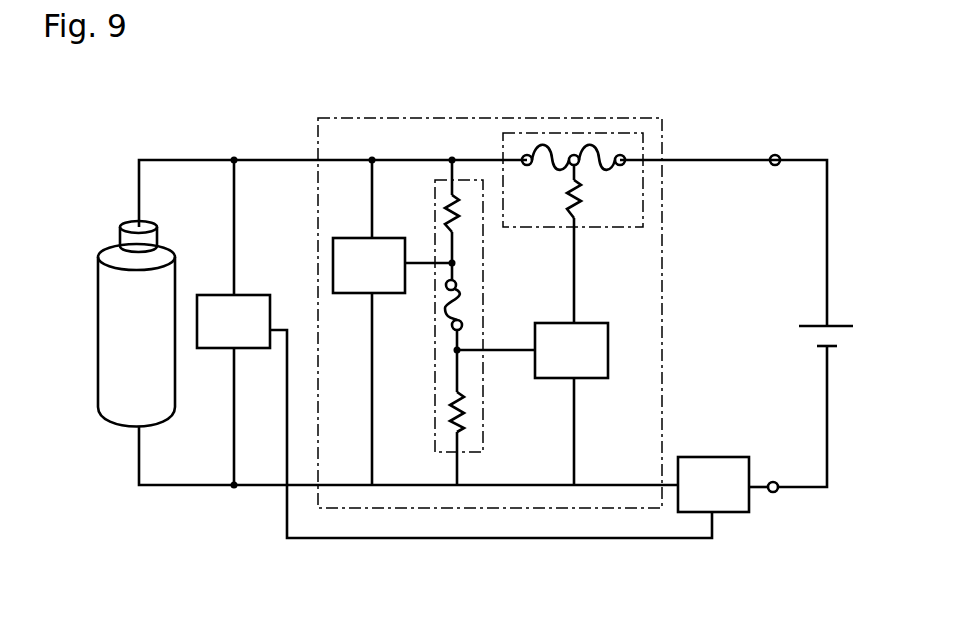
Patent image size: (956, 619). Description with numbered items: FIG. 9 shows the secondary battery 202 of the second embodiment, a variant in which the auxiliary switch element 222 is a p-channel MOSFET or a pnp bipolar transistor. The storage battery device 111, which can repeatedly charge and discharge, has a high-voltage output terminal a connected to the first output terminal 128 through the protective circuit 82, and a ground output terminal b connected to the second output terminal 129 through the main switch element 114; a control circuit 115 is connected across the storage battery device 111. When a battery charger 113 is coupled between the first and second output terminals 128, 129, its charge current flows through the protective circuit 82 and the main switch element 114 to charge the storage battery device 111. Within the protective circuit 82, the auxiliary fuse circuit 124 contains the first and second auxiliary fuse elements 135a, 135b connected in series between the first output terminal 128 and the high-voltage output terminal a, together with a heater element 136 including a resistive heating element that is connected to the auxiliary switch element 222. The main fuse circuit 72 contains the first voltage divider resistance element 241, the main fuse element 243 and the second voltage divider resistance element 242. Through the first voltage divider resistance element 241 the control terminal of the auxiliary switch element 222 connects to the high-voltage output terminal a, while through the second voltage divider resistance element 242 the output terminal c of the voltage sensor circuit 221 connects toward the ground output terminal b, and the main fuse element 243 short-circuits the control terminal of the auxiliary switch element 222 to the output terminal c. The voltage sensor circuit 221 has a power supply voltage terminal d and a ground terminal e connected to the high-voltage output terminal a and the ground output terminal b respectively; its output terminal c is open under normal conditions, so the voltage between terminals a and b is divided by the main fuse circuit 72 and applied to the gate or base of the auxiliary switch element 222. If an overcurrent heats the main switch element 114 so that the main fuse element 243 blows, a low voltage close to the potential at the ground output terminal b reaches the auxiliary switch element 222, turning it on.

The secondary battery 202 is at (243, 97).
The storage battery device 111 is at (107, 240).
The high-voltage output terminal a is at (143, 222).
The ground output terminal b is at (142, 428).
The control circuit 115 is at (210, 352).
The protection circuit 82 is at (437, 118).
The voltage sensor circuit 221 is at (348, 238).
The first voltage divider resistance element 241 is at (449, 210).
The power supply voltage terminal d is at (375, 238).
The ground terminal e is at (365, 296).
The output terminal c is at (411, 266).
The main fuse circuit 72 is at (487, 264).
The main fuse element 243 is at (465, 312).
The second voltage divider resistance element 242 is at (470, 416).
The auxiliary switch element 222 is at (608, 343).
The auxiliary fuse circuit 124 is at (643, 142).
The first auxiliary fuse element 135a is at (612, 140).
The second auxiliary fuse element 135b is at (533, 140).
The heater element 136 is at (592, 200).
The first output terminal 128 is at (775, 155).
The second output terminal 129 is at (773, 492).
The battery charger 113 is at (812, 325).
The main switch element 114 is at (730, 457).